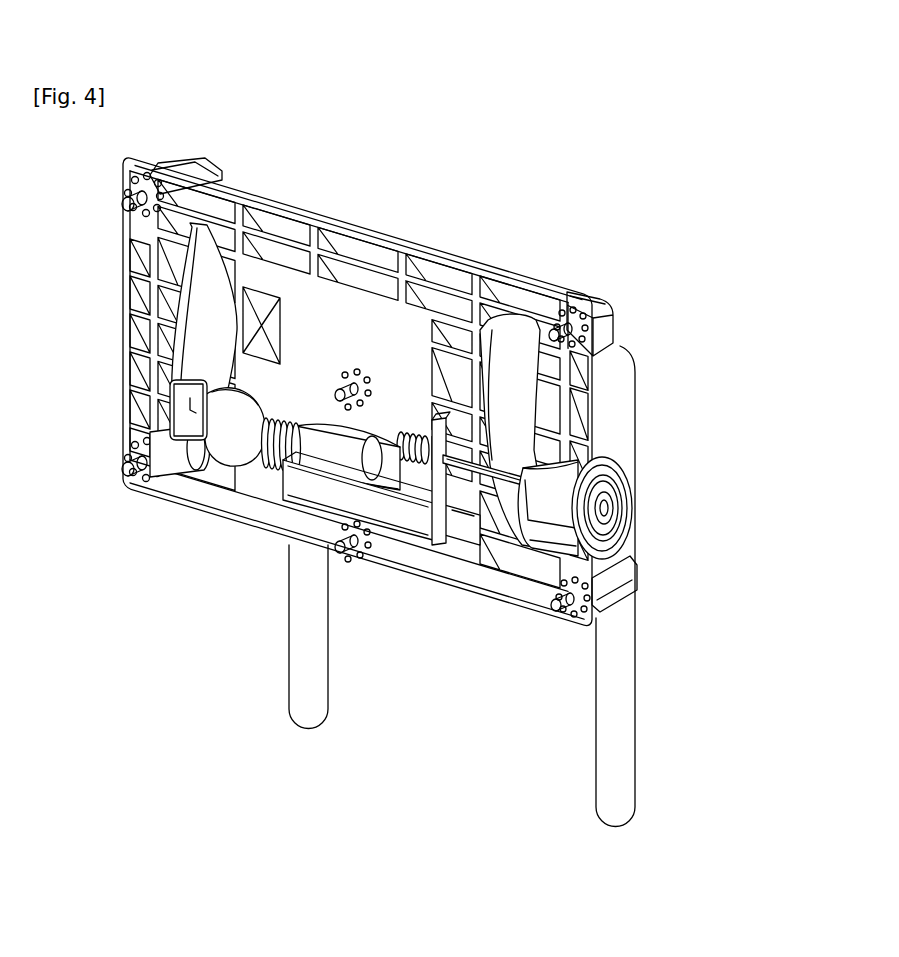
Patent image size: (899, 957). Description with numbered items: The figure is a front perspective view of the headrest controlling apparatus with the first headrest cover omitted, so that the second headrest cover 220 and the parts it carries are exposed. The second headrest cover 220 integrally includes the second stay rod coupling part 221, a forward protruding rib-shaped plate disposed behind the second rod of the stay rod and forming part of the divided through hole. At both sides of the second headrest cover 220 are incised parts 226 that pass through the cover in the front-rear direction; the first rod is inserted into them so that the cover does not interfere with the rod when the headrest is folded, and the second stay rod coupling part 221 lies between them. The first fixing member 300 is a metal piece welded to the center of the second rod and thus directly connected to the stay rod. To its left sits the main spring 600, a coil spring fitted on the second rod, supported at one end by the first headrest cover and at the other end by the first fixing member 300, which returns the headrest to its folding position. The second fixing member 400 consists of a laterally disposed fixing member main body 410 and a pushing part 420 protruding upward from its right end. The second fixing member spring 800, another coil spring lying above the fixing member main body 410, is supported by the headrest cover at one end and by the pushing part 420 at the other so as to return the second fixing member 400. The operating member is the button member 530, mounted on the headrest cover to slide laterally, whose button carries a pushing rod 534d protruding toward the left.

The second headrest cover 220 is at (646, 333).
The second stay rod coupling part 221 is at (273, 393).
The incised parts 226 is at (190, 412).
The first fixing member 300 is at (287, 428).
The second fixing member 400 is at (312, 543).
The fixing member main body 410 is at (333, 497).
The pushing part 420 is at (438, 500).
The button member 530 is at (640, 474).
The pushing rod 534d is at (482, 487).
The main spring 600 is at (287, 433).
The second fixing member spring 800 is at (423, 440).